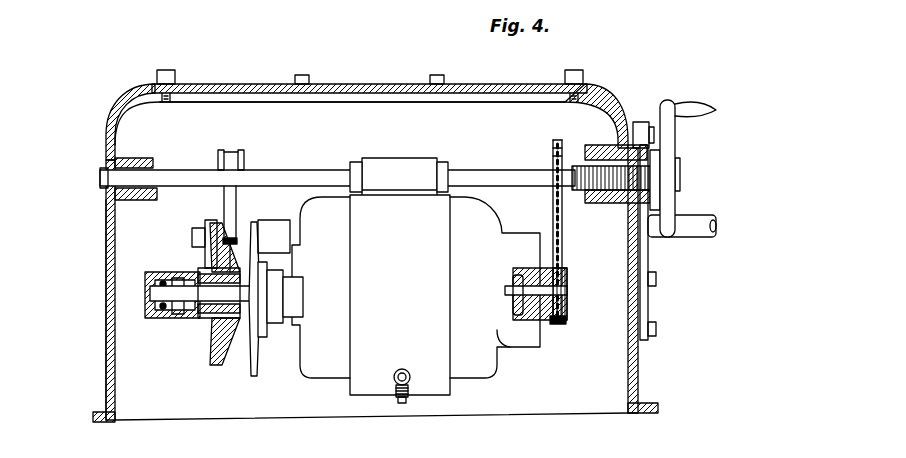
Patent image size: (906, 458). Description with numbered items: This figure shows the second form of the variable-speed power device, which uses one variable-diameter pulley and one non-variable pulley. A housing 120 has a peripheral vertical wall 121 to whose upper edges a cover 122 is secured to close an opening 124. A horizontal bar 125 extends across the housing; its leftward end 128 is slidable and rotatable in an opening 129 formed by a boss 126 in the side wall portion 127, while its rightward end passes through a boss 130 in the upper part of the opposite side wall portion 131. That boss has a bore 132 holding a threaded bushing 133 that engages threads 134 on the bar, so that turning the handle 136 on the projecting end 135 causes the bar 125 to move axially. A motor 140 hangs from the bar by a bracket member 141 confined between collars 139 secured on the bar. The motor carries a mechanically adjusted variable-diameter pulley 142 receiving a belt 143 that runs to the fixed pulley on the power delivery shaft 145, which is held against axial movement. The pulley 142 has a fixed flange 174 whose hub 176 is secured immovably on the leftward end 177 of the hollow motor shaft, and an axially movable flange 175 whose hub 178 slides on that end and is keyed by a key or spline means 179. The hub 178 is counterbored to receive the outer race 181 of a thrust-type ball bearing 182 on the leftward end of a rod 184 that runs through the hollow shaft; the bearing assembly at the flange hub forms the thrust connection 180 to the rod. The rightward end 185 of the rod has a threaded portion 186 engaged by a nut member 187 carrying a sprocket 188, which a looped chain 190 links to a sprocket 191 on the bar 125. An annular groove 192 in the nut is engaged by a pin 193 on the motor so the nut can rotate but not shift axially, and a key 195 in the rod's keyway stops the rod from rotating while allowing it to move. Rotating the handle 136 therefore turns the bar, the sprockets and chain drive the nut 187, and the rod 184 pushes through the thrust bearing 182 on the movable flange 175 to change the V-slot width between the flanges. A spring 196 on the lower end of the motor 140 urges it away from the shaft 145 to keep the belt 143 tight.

The housing 120 is at (108, 283).
The peripheral vertical wall 121 is at (110, 240).
The cover 122 is at (262, 88).
The opening 124 is at (298, 97).
The horizontal bar 125 is at (337, 173).
The boss 126 is at (137, 165).
The side wall portion 127 is at (113, 367).
The leftward end 128 is at (100, 175).
The opening 129 is at (135, 193).
The boss 130 is at (594, 147).
The side wall portion 131 is at (540, 245).
The bore 132 is at (597, 196).
The threaded bushing 133 is at (628, 118).
The threads 134 is at (653, 158).
The projecting end 135 is at (652, 177).
The handle 136 is at (668, 126).
The collars 139 is at (443, 163).
The motor 140 is at (368, 363).
The bracket member 141 is at (408, 177).
The variable-diameter pulley 142 is at (235, 352).
The belt 143 is at (232, 160).
The power delivery shaft 145 is at (277, 233).
The fixed flange 174 is at (290, 268).
The axially movable flange 175 is at (213, 343).
The hub 176 is at (262, 314).
The leftward end 177 is at (250, 292).
The hub 178 is at (203, 320).
The key or spline means 179 is at (208, 275).
The bearing housing 180 is at (172, 295).
The outer race 181 is at (162, 283).
The thrust-type ball bearing 182 is at (147, 313).
The rod 184 is at (157, 293).
The rightward end 185 is at (563, 288).
The threaded portion 186 is at (552, 315).
The nut member 187 is at (563, 278).
The sprocket 188 is at (566, 318).
The looped chain 190 is at (566, 240).
The sprocket 191 is at (549, 143).
The annular groove 192 is at (552, 268).
The pin 193 is at (534, 316).
The key 195 is at (517, 290).
The spring 196 is at (408, 378).